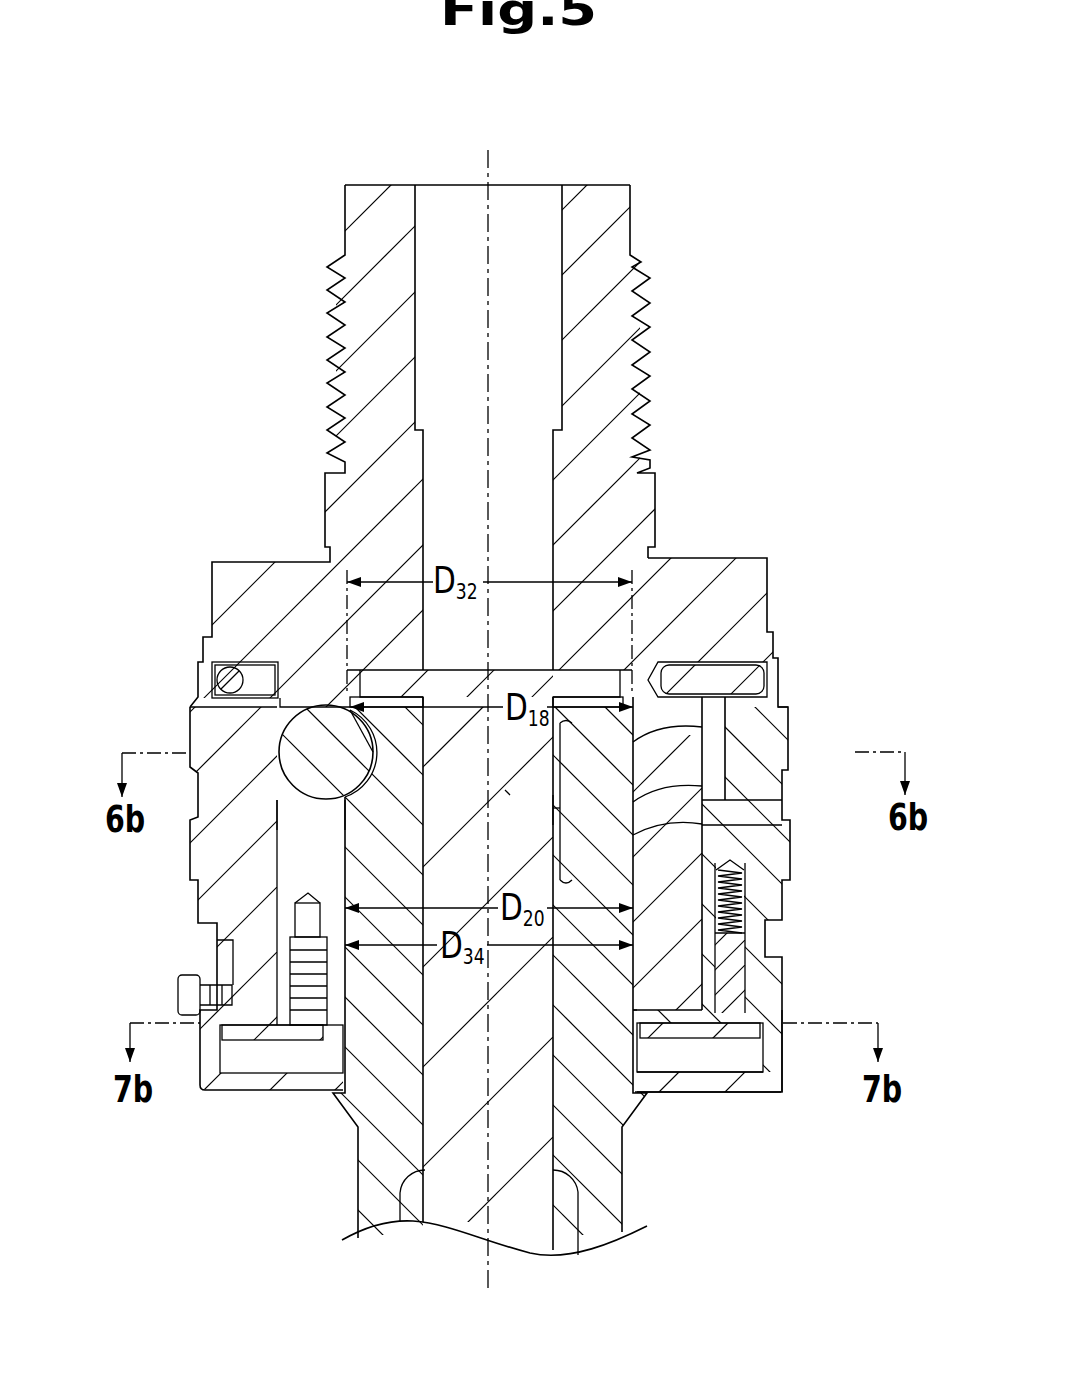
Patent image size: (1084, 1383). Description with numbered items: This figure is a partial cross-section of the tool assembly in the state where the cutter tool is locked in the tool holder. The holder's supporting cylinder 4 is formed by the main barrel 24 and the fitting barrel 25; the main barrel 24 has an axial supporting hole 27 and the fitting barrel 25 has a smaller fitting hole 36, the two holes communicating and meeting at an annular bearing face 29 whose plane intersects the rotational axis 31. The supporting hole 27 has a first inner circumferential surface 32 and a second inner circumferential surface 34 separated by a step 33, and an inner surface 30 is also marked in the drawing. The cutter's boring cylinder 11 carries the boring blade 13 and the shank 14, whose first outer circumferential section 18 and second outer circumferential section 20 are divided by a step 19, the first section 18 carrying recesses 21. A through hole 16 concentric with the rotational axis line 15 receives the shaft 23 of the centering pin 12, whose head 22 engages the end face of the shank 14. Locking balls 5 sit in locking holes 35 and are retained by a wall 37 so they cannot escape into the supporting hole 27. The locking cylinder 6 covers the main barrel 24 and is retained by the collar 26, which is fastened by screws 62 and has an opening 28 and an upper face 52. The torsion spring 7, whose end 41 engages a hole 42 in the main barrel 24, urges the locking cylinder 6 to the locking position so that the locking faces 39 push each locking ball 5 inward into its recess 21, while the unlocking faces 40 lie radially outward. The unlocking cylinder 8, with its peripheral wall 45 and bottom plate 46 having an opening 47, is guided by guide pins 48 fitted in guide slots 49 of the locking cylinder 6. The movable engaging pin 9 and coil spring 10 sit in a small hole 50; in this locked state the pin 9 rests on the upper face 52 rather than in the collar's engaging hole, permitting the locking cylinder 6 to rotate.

The supporting cylinder 4 is at (752, 556).
The locking balls 5 is at (290, 733).
The locking cylinder 6 is at (247, 887).
The torsion spring 7 is at (268, 688).
The unlocking cylinder 8 is at (781, 1093).
The movable engaging pin 9 is at (787, 940).
The coil spring 10 is at (747, 893).
The boring cylinder 11 is at (817, 1090).
The centering pin 12 is at (460, 1197).
The boring blade 13 is at (625, 1213).
The shank 14 is at (607, 1003).
The rotational axis line 15 is at (520, 1285).
The through hole 16 is at (433, 1088).
The first outer circumferential section 18 is at (755, 740).
The step 19 is at (725, 788).
The second outer circumferential section 20 is at (727, 823).
The recesses 21 is at (380, 757).
The head 22 is at (598, 670).
The shaft 23 is at (480, 1232).
The main barrel 24 is at (322, 878).
The fitting barrel 25 is at (325, 492).
The collar 26 is at (658, 1040).
The supporting hole 27 is at (347, 683).
The opening 28 is at (630, 1030).
The bearing face 29 is at (397, 670).
The inner cylindrical surface 30 is at (555, 808).
The rotational axis 31 is at (508, 790).
The first inner circumferential surface 32 is at (630, 750).
The step 33 is at (632, 808).
The second inner circumferential surface 34 is at (632, 870).
The locking holes 35 is at (292, 803).
The fitting hole 36 is at (527, 197).
The wall 37 is at (343, 807).
The locking faces 39 is at (300, 757).
The unlocking faces 40 is at (723, 747).
The end of the torsion spring 41 is at (672, 686).
The hole 42 is at (722, 690).
The peripheral wall 45 is at (783, 1062).
The bottom plate 46 is at (712, 1090).
The opening 47 is at (340, 1066).
The guide pins 48 is at (178, 992).
The guide slots 49 is at (230, 947).
The small hole 50 is at (740, 867).
The upper face 52 is at (733, 1022).
The screws 62 is at (295, 1040).